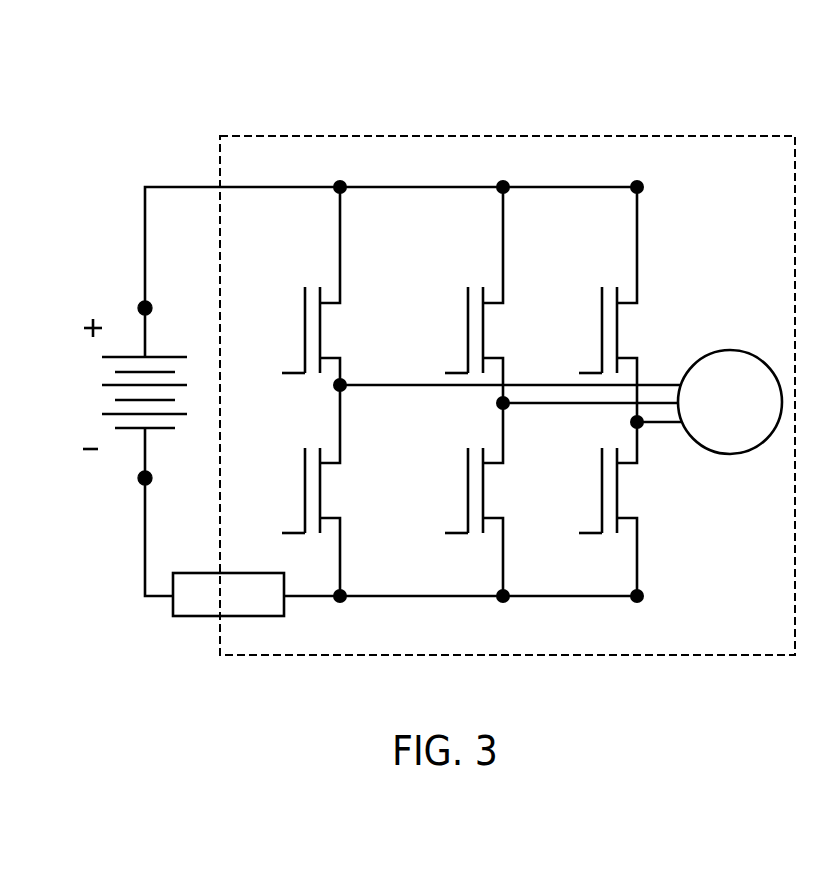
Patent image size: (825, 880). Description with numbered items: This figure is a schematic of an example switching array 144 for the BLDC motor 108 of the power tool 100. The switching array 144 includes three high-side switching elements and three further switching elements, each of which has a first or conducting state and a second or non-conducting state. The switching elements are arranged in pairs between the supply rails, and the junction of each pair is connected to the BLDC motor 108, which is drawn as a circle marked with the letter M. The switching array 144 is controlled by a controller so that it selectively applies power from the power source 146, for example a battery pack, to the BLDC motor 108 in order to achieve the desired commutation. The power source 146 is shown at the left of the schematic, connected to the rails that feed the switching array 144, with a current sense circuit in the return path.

The switching array 144 is at (148, 101).
The power tool 100 is at (327, 135).
The power source 146 is at (106, 293).
The BLDC motor 108 is at (728, 350).